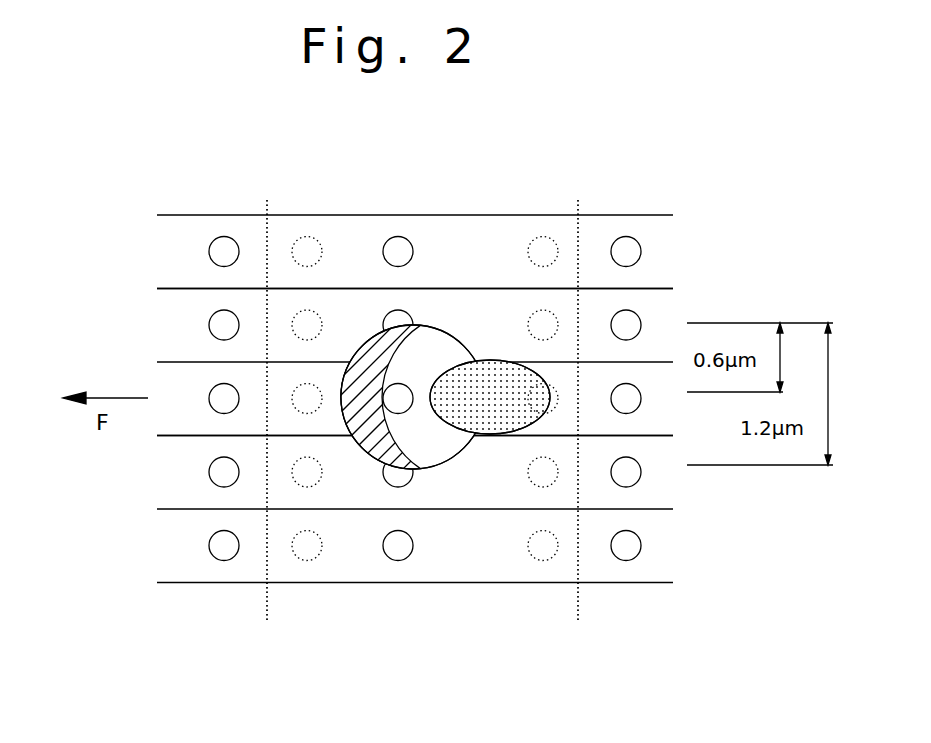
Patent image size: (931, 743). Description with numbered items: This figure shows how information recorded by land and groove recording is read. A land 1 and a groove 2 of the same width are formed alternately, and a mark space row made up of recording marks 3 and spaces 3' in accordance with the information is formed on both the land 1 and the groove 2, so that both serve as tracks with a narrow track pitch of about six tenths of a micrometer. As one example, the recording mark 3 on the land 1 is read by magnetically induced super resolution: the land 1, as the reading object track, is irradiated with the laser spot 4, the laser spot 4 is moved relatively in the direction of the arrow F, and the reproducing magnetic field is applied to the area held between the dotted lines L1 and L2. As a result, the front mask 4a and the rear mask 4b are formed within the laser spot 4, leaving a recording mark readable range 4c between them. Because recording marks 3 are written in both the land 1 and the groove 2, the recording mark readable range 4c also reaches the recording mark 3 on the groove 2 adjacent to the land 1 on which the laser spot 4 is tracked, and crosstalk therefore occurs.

The land 1 is at (168, 417).
The groove 2 is at (198, 458).
The recording mark 3 is at (425, 333).
The space 3' is at (425, 328).
The laser spot 4 is at (462, 317).
The front mask 4a is at (372, 442).
The rear mask 4b is at (505, 415).
The recording mark readable range 4c is at (443, 450).
The dotted line L1 is at (267, 602).
The dotted line L2 is at (582, 598).